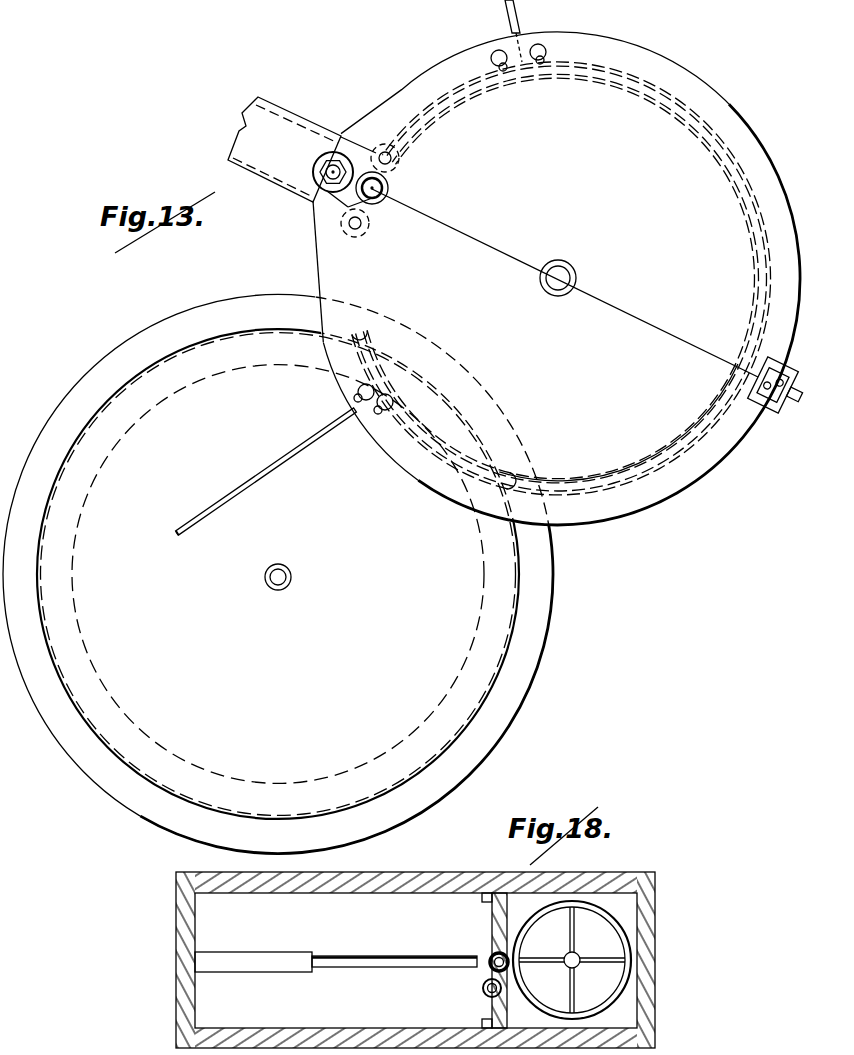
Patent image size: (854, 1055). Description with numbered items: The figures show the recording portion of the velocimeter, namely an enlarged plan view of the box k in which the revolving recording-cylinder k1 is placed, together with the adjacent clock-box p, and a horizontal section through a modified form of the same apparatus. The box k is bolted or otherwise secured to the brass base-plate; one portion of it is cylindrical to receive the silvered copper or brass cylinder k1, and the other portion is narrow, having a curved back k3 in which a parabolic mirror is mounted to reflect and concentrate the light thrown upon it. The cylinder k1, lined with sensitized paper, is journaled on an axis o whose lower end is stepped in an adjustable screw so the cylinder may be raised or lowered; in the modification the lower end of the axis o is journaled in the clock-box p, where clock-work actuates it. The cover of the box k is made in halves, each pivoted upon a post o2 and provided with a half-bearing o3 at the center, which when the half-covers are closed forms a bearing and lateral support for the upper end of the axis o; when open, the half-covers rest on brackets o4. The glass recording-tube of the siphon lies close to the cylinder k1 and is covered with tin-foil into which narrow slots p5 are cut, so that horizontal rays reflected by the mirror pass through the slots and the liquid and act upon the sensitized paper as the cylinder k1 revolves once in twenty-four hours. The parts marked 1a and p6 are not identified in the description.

In FIG. 13, the box k is at (556, 278).
In FIG. 18, the box k is at (415, 946).
In FIG. 13, the revolving cylinder k1 is at (707, 143).
In FIG. 18, the revolving cylinder k1 is at (572, 960).
In FIG. 13, the curved back k3 is at (302, 152).
In FIG. 13, the axis o is at (577, 269).
In FIG. 18, the axis o is at (578, 967).
In FIG. 13, the post o2 is at (564, 259).
In FIG. 13, the half-bearing o3 is at (383, 151).
In FIG. 13, the brackets o4 is at (361, 267).
In FIG. 13, the roller 1a is at (389, 186).
In FIG. 13, the clock-box p is at (545, 663).
In FIG. 18, the narrow slots p5 is at (517, 957).
In FIG. 18, the rollers p6 is at (490, 983).